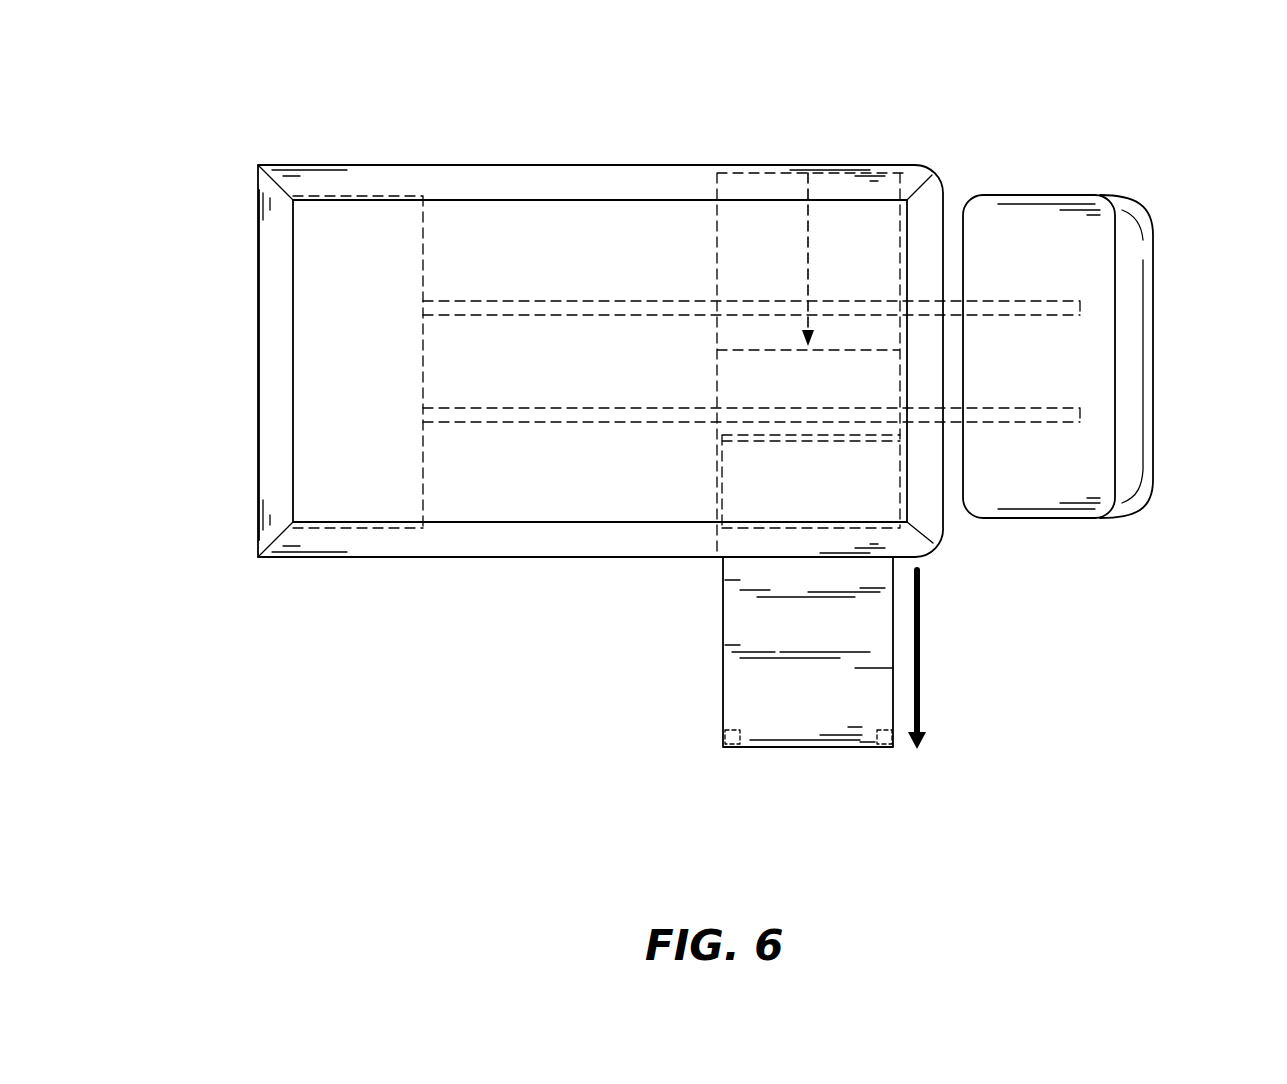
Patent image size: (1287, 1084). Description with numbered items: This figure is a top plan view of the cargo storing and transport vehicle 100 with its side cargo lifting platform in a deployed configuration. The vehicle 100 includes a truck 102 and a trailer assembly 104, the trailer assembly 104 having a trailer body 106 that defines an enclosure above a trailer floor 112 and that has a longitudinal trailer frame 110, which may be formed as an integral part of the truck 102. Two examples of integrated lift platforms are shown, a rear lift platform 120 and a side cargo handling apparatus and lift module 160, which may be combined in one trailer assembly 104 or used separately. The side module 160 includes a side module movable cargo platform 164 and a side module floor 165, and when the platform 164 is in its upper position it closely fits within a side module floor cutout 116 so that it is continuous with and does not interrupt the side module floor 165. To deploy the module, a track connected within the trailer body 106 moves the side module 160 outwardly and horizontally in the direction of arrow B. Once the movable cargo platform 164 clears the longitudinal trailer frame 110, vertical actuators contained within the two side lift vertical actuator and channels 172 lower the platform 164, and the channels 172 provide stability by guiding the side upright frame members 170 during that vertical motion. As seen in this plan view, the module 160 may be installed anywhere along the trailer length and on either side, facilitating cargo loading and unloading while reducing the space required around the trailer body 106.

The cargo storing and transport vehicle 100 is at (1150, 137).
The truck 102 is at (1125, 483).
The trailer assembly 104 is at (286, 147).
The trailer body 106 is at (505, 187).
The longitudinal trailer frame 110 is at (565, 300).
The trailer floor 112 is at (540, 440).
The side module floor cutout 116 is at (780, 436).
The integrated lift platform 120 is at (250, 363).
The side cargo handling apparatus and lift module 160 is at (806, 764).
The side module movable cargo platform 164 is at (800, 693).
The side module floor 165 is at (780, 382).
The side upright frame member 170 is at (723, 748).
The side lift vertical actuator and channel 172 is at (893, 748).
The arrow B is at (917, 655).